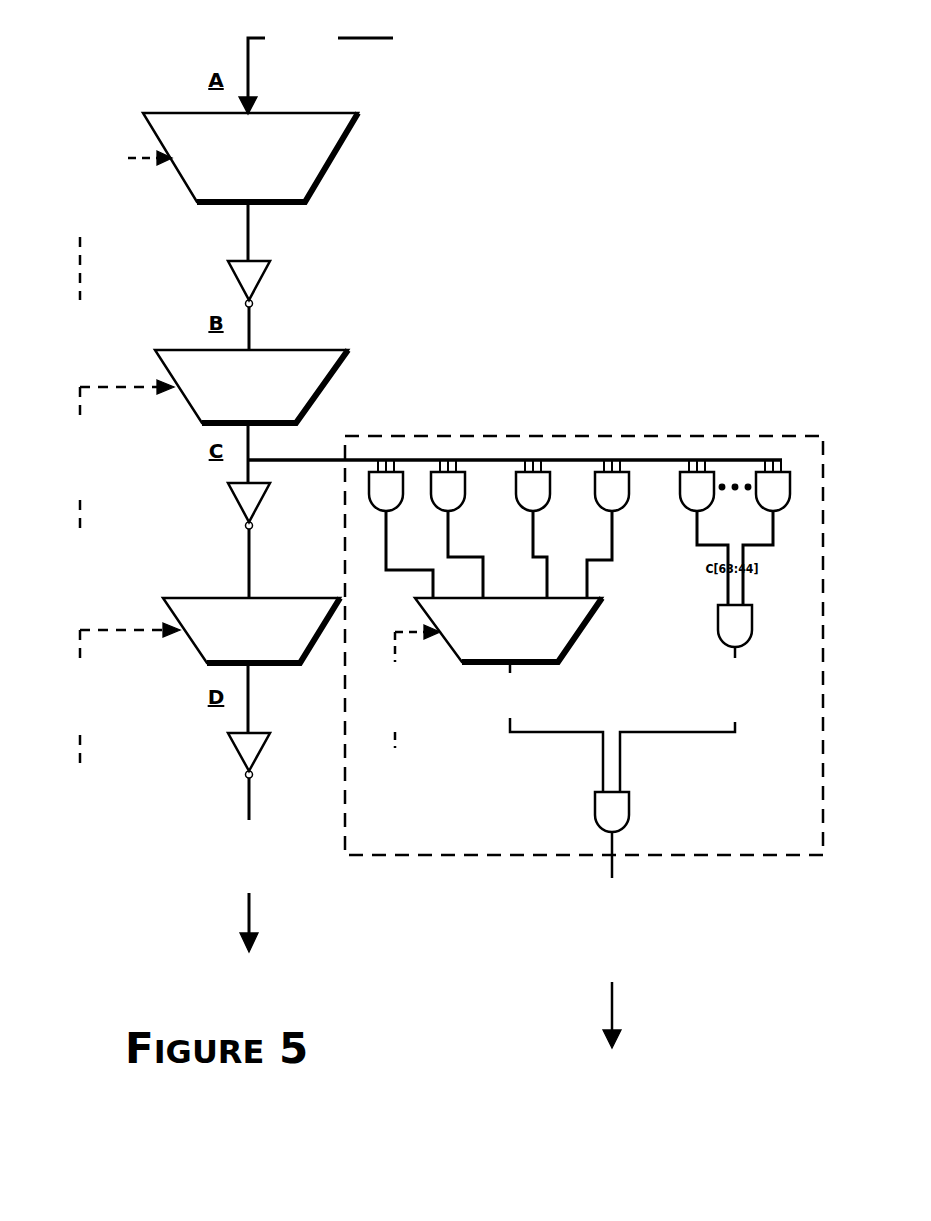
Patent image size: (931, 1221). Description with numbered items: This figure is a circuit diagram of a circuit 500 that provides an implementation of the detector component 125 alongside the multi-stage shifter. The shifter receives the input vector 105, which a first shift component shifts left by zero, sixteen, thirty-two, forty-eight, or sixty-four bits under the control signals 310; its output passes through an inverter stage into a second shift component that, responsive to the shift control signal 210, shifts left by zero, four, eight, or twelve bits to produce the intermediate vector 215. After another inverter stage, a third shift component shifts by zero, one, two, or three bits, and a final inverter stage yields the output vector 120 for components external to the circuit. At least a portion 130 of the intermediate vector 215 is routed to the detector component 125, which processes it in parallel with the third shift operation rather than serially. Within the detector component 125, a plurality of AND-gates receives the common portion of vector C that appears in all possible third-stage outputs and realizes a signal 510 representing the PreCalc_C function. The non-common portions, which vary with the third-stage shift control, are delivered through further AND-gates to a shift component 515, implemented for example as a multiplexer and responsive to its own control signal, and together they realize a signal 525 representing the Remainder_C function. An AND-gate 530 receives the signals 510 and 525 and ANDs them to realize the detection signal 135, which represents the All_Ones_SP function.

The input vector 105 is at (316, 57).
The control signals 310 is at (104, 225).
The shift control signal 210 is at (102, 457).
The intermediate vector 215 is at (232, 435).
The circuit 500 is at (544, 226).
The portion of the intermediate vector 130 is at (318, 447).
The detector component 125 is at (584, 645).
The signal 510 is at (699, 725).
The shift component 515 is at (508, 635).
The signal 525 is at (528, 732).
The AND-gate 530 is at (586, 808).
The detection signal 135 is at (615, 965).
The output vector 120 is at (250, 885).